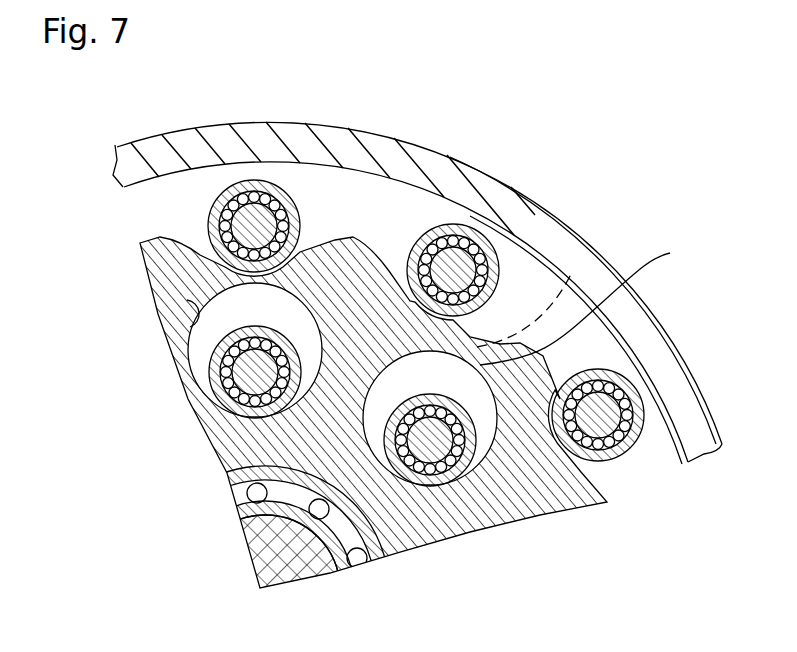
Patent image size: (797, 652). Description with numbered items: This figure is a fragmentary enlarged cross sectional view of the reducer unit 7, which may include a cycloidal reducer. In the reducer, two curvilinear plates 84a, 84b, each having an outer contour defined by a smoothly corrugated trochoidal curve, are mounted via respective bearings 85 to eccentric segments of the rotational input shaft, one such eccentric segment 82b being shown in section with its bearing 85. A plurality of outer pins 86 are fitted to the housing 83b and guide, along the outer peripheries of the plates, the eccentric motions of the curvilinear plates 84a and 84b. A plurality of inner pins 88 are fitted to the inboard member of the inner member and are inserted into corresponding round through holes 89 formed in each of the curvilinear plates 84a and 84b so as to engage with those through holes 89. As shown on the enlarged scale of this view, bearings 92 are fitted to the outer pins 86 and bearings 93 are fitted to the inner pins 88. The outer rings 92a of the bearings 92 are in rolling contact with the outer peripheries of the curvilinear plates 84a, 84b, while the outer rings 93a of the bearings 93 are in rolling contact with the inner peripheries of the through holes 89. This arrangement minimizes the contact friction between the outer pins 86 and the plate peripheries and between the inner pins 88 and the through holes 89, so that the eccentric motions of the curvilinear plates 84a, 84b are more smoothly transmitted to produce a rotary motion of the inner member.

The reducer unit 7 is at (196, 121).
The housing 83b is at (250, 133).
The curvilinear plate 84a is at (593, 236).
The curvilinear plate 84b is at (595, 299).
The outer pin 86 is at (257, 218).
The bearing 92 is at (471, 242).
The outer ring 92a is at (483, 252).
The inner pin 88 is at (240, 395).
The through hole 89 is at (197, 319).
The bearing 93 is at (248, 380).
The outer ring 93a is at (223, 352).
The bearing 85 is at (360, 562).
The eccentric segment 82b is at (300, 560).